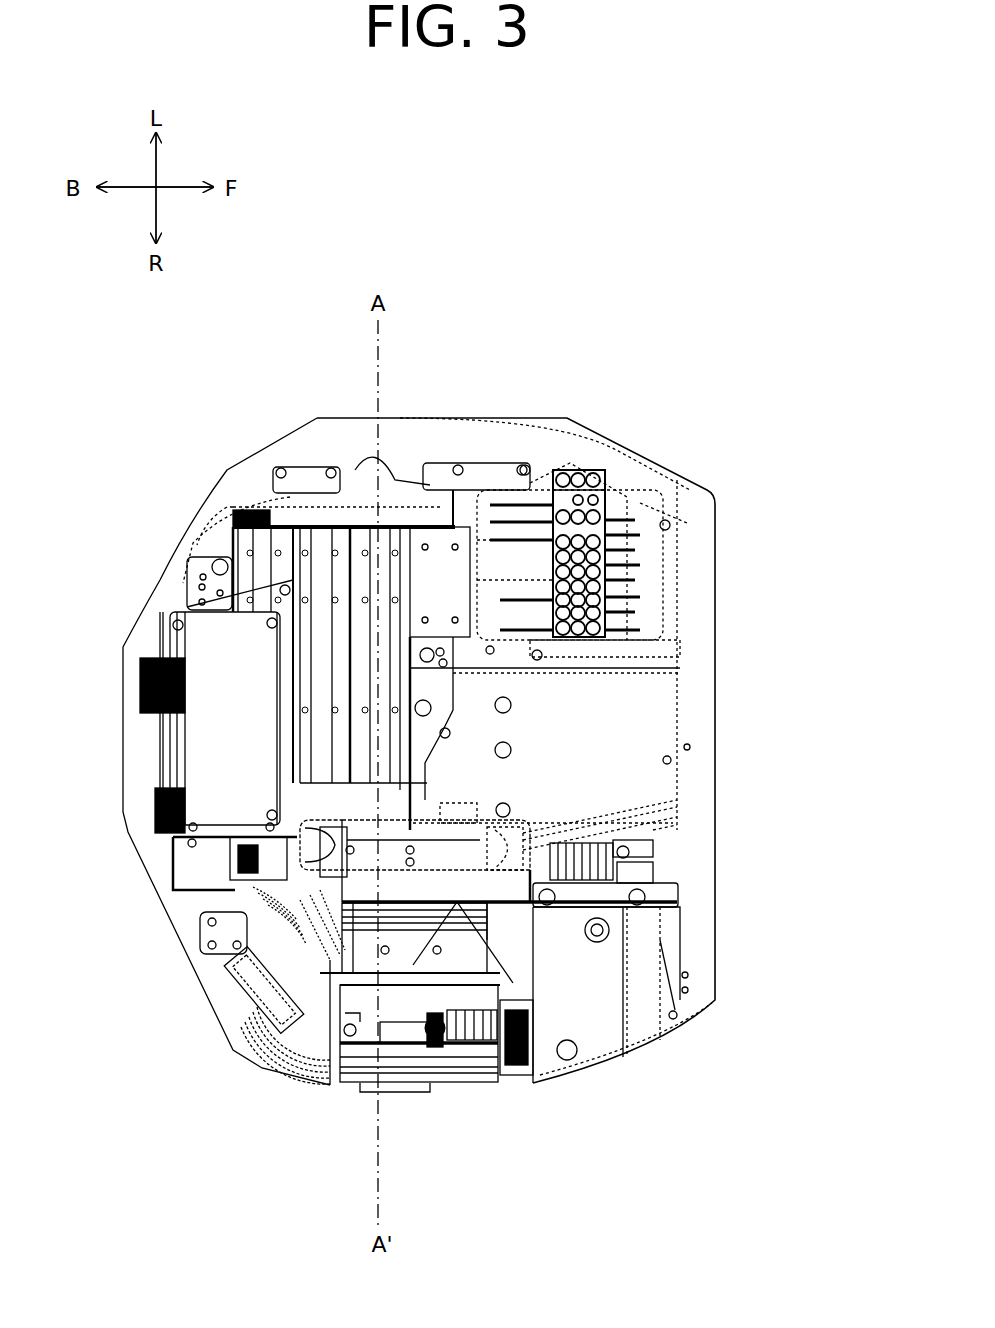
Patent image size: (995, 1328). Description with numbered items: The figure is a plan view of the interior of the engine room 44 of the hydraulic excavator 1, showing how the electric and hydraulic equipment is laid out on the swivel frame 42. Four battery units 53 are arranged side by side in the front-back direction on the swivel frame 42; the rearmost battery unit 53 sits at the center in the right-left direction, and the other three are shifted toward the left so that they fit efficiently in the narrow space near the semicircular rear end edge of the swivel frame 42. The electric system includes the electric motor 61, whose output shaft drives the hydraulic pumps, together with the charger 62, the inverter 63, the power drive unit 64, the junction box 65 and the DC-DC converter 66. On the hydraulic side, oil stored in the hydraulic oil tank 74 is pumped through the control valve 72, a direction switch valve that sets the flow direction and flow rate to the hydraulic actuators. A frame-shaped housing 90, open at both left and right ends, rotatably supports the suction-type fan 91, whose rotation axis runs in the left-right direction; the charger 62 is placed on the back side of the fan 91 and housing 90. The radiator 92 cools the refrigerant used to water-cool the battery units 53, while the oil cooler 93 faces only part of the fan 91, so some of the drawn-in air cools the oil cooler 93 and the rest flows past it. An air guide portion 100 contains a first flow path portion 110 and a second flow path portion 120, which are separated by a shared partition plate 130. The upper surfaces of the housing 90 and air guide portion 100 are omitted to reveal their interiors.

The hydraulic excavator 1 is at (763, 262).
The swivel frame 42 is at (564, 444).
The engine room 44 is at (735, 432).
The battery unit 53 is at (256, 522).
The electric motor 61 is at (320, 920).
The charger 62 is at (262, 985).
The inverter 63 is at (330, 925).
The power drive unit 64 is at (447, 522).
The junction box 65 is at (205, 657).
The DC-DC converter 66 is at (440, 787).
The control valve 72 is at (640, 562).
The hydraulic oil tank 74 is at (600, 977).
The housing 90 is at (340, 985).
The fan 91 is at (433, 1060).
The radiator 92 is at (470, 1070).
The oil cooler 93 is at (533, 1070).
The air guide portion 100 is at (527, 867).
The first flow path portion 110 is at (512, 918).
The second flow path portion 120 is at (285, 1022).
The partition plate 130 is at (510, 973).